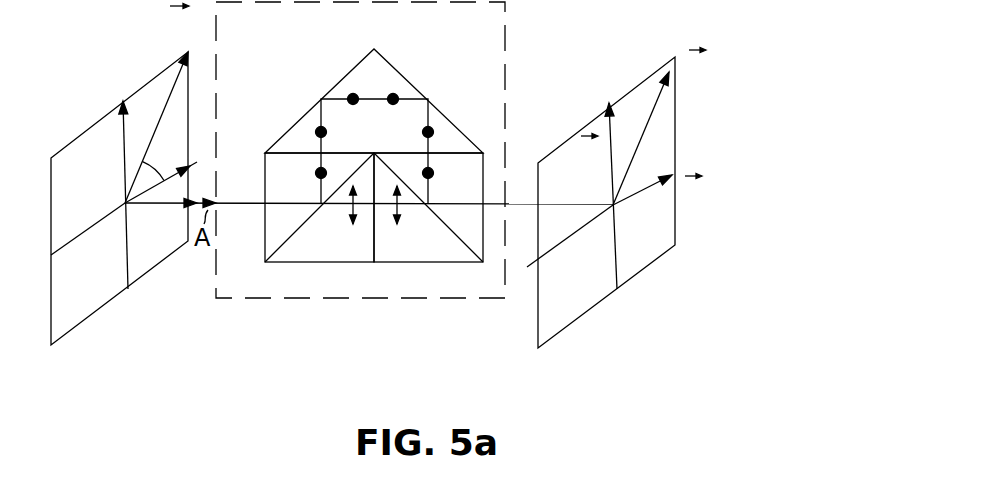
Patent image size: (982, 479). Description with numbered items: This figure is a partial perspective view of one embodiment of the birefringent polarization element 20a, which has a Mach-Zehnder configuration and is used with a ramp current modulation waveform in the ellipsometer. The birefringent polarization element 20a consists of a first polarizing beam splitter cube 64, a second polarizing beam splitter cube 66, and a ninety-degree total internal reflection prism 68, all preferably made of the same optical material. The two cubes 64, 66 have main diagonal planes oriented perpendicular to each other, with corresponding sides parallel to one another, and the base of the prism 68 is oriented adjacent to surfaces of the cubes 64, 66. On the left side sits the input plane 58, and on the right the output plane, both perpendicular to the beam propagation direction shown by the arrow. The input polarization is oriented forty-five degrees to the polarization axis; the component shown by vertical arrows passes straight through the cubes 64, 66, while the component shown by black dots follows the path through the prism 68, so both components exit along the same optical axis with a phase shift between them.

The input polarizer plane O 58 is at (86, 321).
The birefringent phase element (BPE) 20a is at (296, 304).
The PBSC 64 is at (360, 263).
The PBSC 66 is at (446, 263).
The 90° total internal reflection prism 68 is at (440, 110).